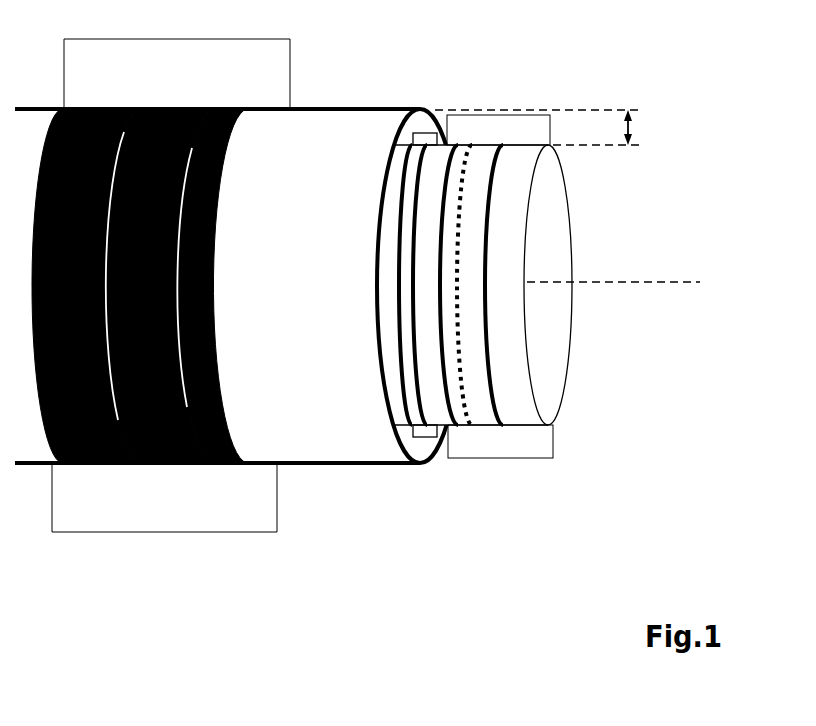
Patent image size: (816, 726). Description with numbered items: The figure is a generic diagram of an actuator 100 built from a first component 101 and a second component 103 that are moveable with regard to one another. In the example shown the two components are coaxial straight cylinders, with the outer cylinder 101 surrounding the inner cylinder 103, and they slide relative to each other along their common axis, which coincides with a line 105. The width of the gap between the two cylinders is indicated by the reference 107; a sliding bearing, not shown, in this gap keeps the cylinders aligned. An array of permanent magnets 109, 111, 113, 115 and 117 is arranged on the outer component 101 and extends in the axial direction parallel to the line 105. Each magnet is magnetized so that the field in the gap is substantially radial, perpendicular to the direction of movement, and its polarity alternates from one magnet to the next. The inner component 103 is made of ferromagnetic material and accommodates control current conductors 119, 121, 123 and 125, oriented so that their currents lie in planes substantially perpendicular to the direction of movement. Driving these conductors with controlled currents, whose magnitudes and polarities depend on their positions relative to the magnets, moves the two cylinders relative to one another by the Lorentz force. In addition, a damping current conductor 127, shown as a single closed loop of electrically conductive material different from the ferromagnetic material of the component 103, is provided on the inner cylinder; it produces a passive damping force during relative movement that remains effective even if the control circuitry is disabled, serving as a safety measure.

The actuator 100 is at (505, 689).
The first component 101 is at (353, 452).
The second component 103 is at (553, 358).
The line 105 is at (652, 282).
The gap width 107 is at (635, 123).
The permanent magnet 109 is at (77, 463).
The permanent magnet 111 is at (97, 109).
The permanent magnet 113 is at (148, 463).
The permanent magnet 115 is at (167, 109).
The permanent magnet 117 is at (228, 463).
The control current conductor 119 is at (407, 403).
The control current conductor 121 is at (417, 382).
The control current conductor 123 is at (438, 347).
The control current conductor 125 is at (485, 343).
The damping current conductor 127 is at (462, 195).